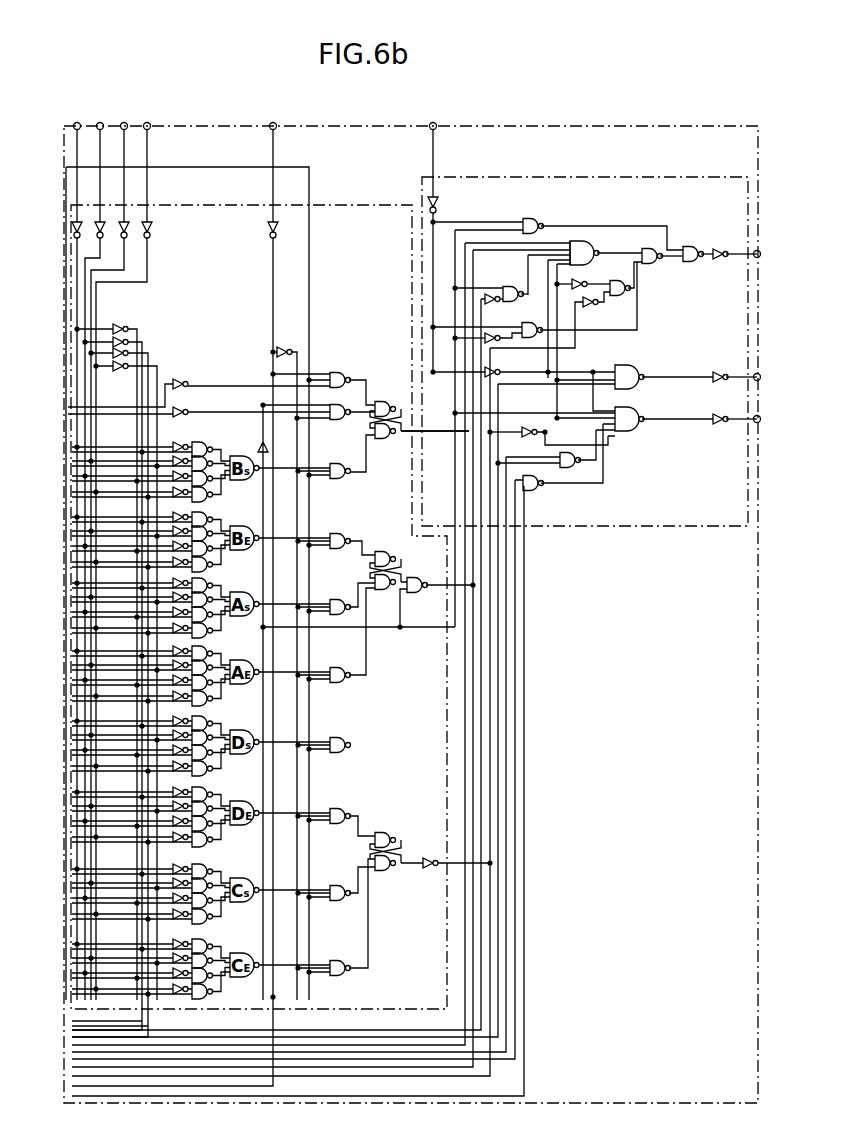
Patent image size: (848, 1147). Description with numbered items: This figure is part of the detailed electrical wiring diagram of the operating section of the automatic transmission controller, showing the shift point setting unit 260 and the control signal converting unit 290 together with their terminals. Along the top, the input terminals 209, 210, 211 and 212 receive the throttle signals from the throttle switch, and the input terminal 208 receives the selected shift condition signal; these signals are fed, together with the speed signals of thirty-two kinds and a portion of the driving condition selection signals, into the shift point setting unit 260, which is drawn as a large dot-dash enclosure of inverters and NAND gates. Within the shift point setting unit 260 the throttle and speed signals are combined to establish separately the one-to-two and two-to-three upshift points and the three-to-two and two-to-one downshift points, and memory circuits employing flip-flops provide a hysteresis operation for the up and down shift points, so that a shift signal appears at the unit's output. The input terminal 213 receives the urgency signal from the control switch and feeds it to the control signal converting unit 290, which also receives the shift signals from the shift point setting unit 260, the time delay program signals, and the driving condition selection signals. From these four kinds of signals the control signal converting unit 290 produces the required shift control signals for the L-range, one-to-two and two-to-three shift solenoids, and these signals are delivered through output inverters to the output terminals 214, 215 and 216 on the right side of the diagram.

The input terminal 208 is at (276, 122).
The input terminal 209 is at (75, 122).
The input terminal 210 is at (99, 122).
The input terminal 211 is at (122, 122).
The input terminal 212 is at (158, 116).
The input terminal 213 is at (433, 122).
The output terminal 214 is at (761, 256).
The output terminal 215 is at (761, 379).
The output terminal 216 is at (761, 421).
The shift point setting unit 260 is at (374, 205).
The control signal converting unit 290 is at (584, 177).